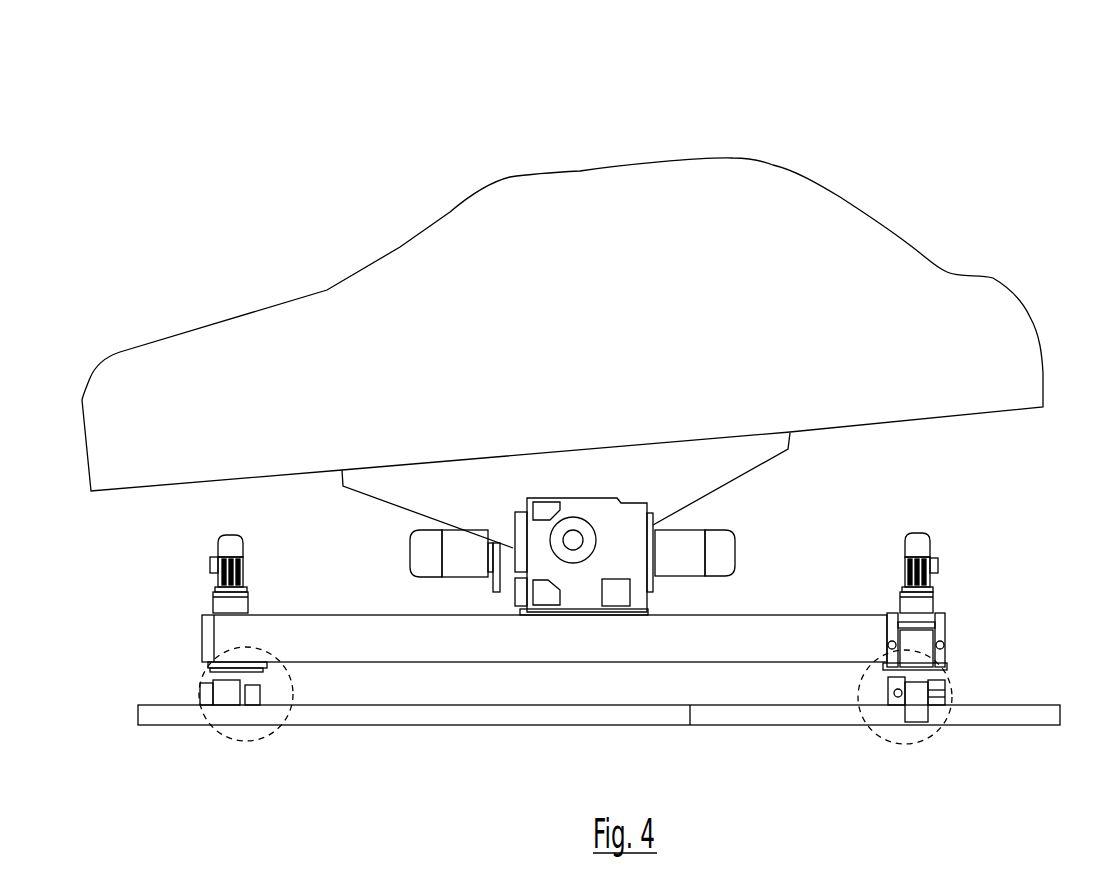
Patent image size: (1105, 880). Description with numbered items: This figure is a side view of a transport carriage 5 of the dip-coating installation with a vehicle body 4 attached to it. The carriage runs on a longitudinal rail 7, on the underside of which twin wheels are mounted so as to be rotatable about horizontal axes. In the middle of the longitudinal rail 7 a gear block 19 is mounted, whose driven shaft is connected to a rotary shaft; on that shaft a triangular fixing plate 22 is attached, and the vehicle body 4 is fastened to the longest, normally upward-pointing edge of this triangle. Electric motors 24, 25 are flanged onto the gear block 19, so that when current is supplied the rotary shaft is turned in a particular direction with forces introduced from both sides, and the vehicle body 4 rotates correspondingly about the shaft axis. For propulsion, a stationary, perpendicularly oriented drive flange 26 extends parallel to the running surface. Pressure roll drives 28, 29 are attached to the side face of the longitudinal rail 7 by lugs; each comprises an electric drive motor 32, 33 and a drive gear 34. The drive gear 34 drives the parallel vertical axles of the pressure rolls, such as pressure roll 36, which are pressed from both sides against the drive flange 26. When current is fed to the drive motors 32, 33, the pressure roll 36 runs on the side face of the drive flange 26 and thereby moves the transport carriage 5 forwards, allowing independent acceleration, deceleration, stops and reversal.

The vehicle body 4 is at (593, 252).
The transport carriage 5 is at (790, 633).
The longitudinal rail 7 is at (383, 636).
The gear block 19 is at (586, 595).
The fixing plate 22 is at (696, 468).
The electric motor 24 is at (688, 565).
The electric motor 25 is at (462, 565).
The drive flange 26 is at (1040, 722).
The pressure roll drive 28 is at (937, 592).
The pressure roll drive 29 is at (212, 587).
The electric drive motor 32 is at (912, 543).
The electric drive motor 33 is at (225, 545).
The drive gear 34 is at (912, 645).
The pressure roll 36 is at (915, 710).